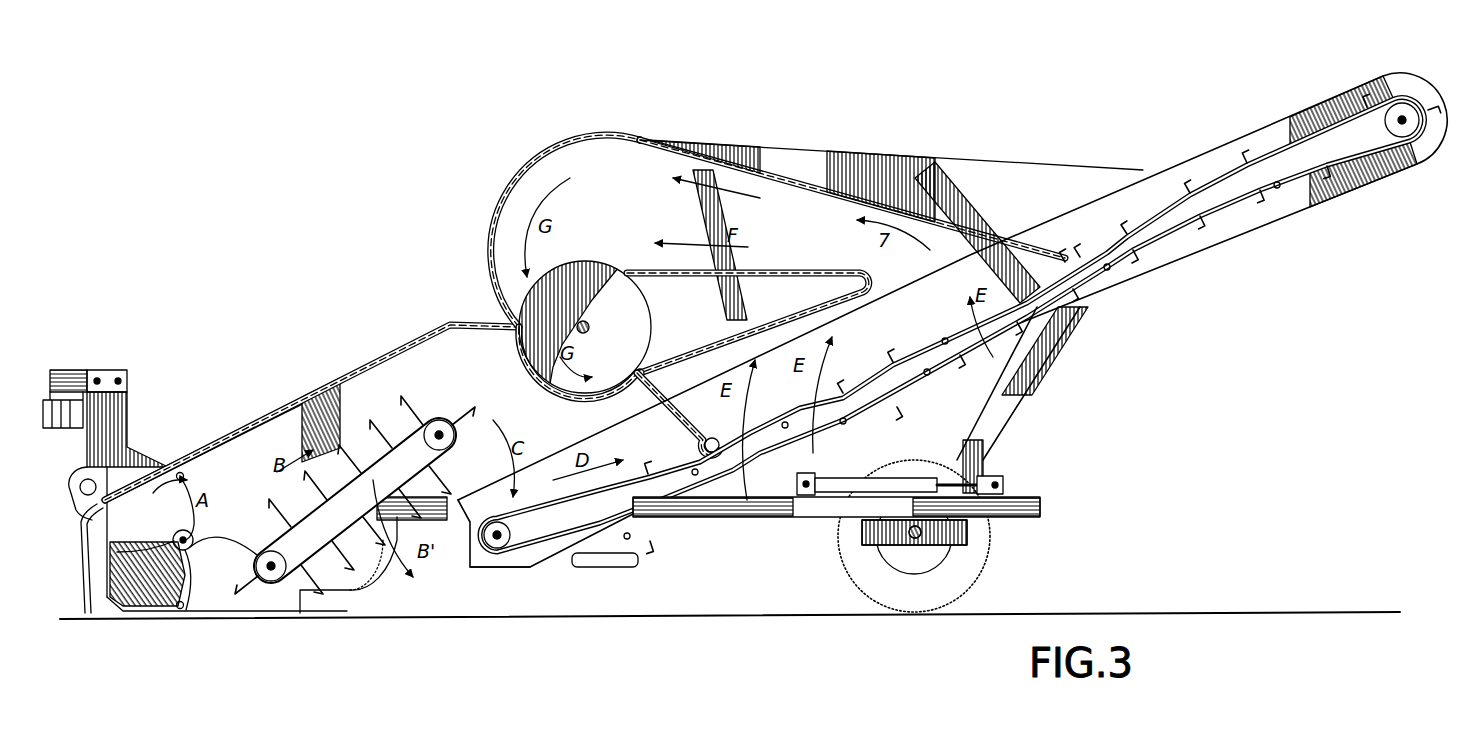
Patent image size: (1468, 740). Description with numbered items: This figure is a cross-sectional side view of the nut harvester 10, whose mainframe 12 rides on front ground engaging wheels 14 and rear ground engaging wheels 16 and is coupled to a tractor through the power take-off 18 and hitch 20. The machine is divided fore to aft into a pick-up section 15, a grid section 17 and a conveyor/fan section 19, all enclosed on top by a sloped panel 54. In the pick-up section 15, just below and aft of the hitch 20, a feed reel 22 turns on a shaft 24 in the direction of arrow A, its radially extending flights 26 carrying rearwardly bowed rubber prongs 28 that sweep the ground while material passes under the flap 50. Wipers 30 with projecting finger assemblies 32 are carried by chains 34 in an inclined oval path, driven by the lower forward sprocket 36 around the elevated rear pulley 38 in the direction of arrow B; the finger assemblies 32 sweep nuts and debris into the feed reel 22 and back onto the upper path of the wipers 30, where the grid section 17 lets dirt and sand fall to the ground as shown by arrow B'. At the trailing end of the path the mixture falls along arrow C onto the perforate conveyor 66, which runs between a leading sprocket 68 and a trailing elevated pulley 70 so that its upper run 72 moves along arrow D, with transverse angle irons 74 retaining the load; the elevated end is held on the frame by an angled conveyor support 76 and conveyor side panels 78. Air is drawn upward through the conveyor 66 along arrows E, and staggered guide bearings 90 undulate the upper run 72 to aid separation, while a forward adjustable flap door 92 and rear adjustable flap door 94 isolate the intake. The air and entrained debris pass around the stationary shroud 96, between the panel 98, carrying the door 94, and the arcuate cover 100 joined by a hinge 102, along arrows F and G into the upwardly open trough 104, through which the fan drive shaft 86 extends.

The nut harvester 10 is at (330, 87).
The mainframe 12 is at (1040, 492).
The ground engaging wheels 14 is at (367, 600).
The pick-up section 15 is at (186, 447).
The rear ground engaging wheels 16 is at (924, 612).
The grid section 17 is at (347, 417).
The power take-off 18 is at (79, 375).
The conveyor/fan section 19 is at (552, 572).
The hitch 20 is at (90, 370).
The feed reel 22 is at (178, 555).
The shaft 24 is at (187, 549).
The flights 26 is at (184, 477).
The prongs 28 is at (126, 550).
The wipers 30 is at (392, 402).
The finger assemblies 32 is at (382, 432).
The chains 34 is at (446, 422).
The forward sprocket 36 is at (260, 568).
The rear pulley 38 is at (450, 443).
The flap 50 is at (83, 612).
The sloped panel 54 is at (383, 353).
The perforate conveyor 66 is at (1237, 213).
The leading sprocket 68 is at (520, 538).
The trailing elevated pulley 70 is at (1400, 107).
The upper run 72 is at (1153, 213).
The angle irons 74 is at (652, 548).
The angled conveyor support 76 is at (1028, 380).
The conveyor side panels 78 is at (1013, 183).
The fan drive shaft 86 is at (588, 324).
The guide bearings 90 is at (786, 424).
The forward adjustable flap door 92 is at (695, 442).
The rear adjustable flap door 94 is at (1062, 258).
The stationary shroud 96 is at (762, 270).
The panel 98 is at (807, 193).
The arcuate cover 100 is at (520, 173).
The hinge 102 is at (634, 140).
The upwardly open trough 104 is at (650, 338).